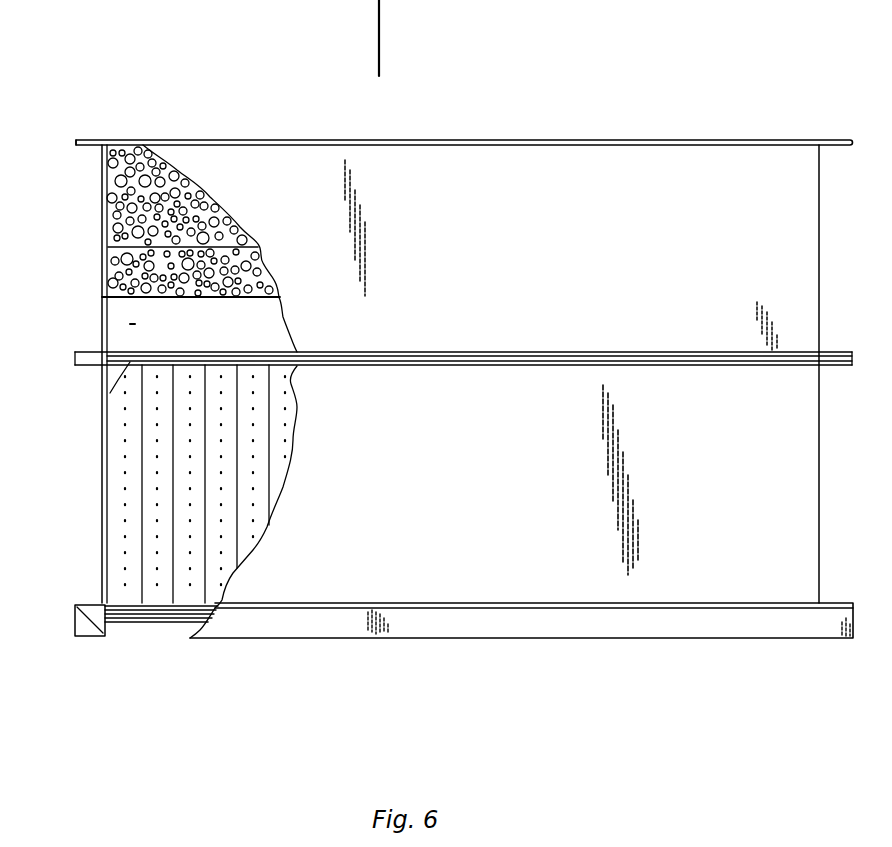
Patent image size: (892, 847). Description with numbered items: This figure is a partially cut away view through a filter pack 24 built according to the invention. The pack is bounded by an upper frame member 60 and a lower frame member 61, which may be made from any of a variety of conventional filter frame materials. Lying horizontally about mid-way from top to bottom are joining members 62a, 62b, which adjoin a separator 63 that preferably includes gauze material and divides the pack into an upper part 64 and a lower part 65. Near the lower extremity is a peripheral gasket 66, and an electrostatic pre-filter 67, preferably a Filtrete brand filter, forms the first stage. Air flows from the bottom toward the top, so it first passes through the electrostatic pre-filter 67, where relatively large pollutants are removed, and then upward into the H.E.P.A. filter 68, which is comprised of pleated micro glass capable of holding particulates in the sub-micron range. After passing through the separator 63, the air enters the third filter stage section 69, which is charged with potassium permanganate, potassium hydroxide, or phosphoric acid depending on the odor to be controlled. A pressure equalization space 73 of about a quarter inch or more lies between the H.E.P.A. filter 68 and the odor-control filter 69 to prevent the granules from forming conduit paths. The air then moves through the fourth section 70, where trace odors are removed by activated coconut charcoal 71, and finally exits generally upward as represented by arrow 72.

The filter pack 24 is at (420, 650).
The upper frame member 60 is at (519, 135).
The lower frame member 61 is at (525, 628).
The joining member 62a is at (552, 350).
The joining member 62b is at (553, 367).
The separator 63 is at (107, 394).
The upper part 64 is at (553, 256).
The lower part 65 is at (551, 492).
The peripheral gasket 66 is at (92, 644).
The electrostatic pre-filter 67 is at (168, 634).
The H.E.P.A. filter 68 is at (120, 538).
The third filter stage section 69 is at (130, 283).
The fourth section 70 is at (103, 199).
The activated coconut charcoal 71 is at (128, 223).
The arrow 72 is at (380, 36).
The pressure equalization space 73 is at (128, 322).